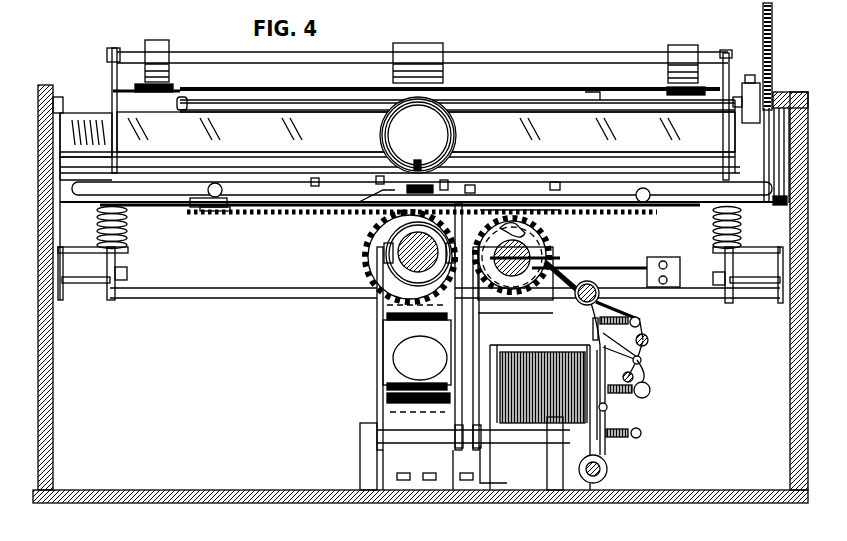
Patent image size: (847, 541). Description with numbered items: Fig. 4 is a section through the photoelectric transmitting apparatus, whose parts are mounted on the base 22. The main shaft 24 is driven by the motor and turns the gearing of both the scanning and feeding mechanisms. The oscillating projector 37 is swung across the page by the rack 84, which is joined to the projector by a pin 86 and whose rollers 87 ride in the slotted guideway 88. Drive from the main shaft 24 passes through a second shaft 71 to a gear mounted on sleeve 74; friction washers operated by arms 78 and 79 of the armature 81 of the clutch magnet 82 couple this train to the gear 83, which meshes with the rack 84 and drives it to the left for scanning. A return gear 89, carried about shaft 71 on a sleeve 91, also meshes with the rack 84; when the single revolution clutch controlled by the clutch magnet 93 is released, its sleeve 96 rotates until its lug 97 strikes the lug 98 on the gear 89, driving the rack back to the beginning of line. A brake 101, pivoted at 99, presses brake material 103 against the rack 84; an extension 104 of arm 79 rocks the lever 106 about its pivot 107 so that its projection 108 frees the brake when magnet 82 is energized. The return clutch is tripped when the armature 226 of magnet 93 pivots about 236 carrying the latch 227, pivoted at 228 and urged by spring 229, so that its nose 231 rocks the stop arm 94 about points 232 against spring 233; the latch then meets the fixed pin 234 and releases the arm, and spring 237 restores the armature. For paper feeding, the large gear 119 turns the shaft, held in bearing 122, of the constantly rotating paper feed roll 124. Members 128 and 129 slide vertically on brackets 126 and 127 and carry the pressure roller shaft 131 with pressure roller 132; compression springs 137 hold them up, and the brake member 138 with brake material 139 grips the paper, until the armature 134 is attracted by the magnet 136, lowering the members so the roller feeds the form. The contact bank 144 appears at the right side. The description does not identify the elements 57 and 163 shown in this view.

The base 22 is at (230, 503).
The main shaft 24 is at (398, 256).
The oscillating projector 37 is at (456, 133).
The scale bar 57 is at (300, 116).
The second shaft 71 is at (542, 262).
The sleeve 74 is at (400, 243).
The arm of armature 78 is at (375, 325).
The arm of armature 79 is at (462, 322).
The armature 81 is at (388, 355).
The clutch magnet 82 is at (387, 387).
The gear 83 is at (380, 229).
The rack 84 is at (555, 185).
The pin 86 is at (417, 160).
The rollers 87 is at (648, 186).
The slotted guideway 88 is at (160, 182).
The gear 89 is at (515, 226).
The sleeve 91 is at (510, 212).
The clutch magnet 93 is at (533, 418).
The stop arm 94 is at (588, 280).
The sleeve 96 is at (507, 290).
The lug 97 is at (533, 232).
The lug 98 is at (533, 213).
The pivot 99 is at (193, 209).
The brake 101 is at (236, 216).
The brake material 103 is at (445, 185).
The extension 104 is at (440, 207).
The lever 106 is at (470, 190).
The pivot 107 is at (380, 180).
The projection 108 is at (315, 183).
The large gear 119 is at (773, 20).
The bearing 122 is at (762, 85).
The paper feed roll 124 is at (562, 127).
The bracket 126 is at (87, 283).
The bracket 127 is at (755, 283).
The member 128 is at (112, 122).
The member 129 is at (727, 160).
The pressure roller shaft 131 is at (500, 55).
The pressure roller 132 is at (685, 50).
The armature 134 is at (380, 306).
The magnet 136 is at (388, 403).
The compression springs 137 is at (713, 232).
The brake member 138 is at (592, 92).
The brake material 139 is at (668, 88).
The contact bank 144 is at (763, 144).
The plate 163 is at (148, 298).
The armature 226 is at (634, 379).
The latch 227 is at (642, 358).
The pivot 228 is at (649, 343).
The spring 229 is at (626, 394).
The nose 231 is at (645, 333).
The pivot points 232 is at (599, 290).
The spring 233 is at (642, 318).
The fixed pin 234 is at (650, 394).
The pivot 236 is at (608, 474).
The spring 237 is at (640, 435).